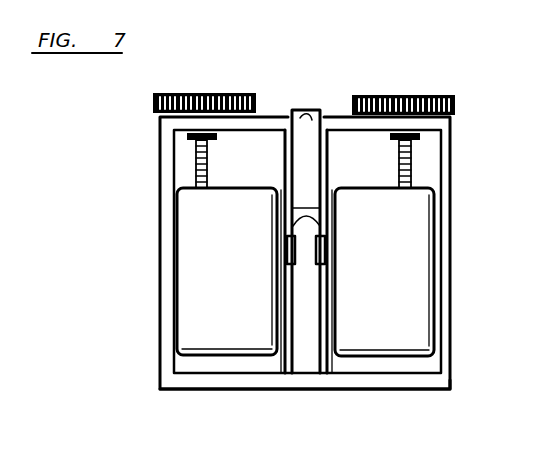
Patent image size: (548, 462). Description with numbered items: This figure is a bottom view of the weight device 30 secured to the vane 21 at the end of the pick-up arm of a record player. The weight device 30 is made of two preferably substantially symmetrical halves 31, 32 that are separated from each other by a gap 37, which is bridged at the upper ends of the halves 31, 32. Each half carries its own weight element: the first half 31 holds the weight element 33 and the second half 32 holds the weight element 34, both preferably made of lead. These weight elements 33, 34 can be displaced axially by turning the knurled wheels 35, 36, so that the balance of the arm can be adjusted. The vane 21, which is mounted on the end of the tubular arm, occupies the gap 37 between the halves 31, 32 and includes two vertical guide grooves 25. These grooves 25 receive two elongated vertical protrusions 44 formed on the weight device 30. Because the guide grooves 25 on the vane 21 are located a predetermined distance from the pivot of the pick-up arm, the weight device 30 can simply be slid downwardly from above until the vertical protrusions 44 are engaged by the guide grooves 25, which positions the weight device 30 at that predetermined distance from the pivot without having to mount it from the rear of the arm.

The vane 21 is at (298, 113).
The vertical guide groove 25 is at (322, 224).
The weight device 30 is at (460, 393).
The half 31 is at (165, 293).
The half 32 is at (342, 118).
The weight element 33 is at (238, 233).
The weight element 34 is at (403, 343).
The knurled wheel 35 is at (217, 92).
The knurled wheel 36 is at (433, 94).
The gap 37 is at (305, 113).
The elongated vertical protrusion 44 is at (285, 248).